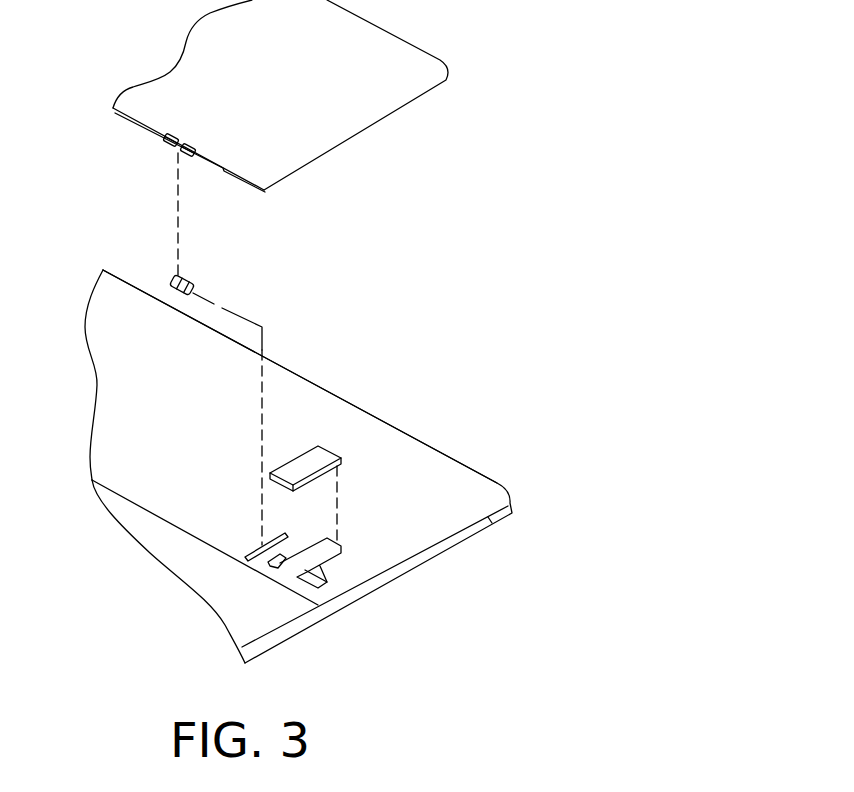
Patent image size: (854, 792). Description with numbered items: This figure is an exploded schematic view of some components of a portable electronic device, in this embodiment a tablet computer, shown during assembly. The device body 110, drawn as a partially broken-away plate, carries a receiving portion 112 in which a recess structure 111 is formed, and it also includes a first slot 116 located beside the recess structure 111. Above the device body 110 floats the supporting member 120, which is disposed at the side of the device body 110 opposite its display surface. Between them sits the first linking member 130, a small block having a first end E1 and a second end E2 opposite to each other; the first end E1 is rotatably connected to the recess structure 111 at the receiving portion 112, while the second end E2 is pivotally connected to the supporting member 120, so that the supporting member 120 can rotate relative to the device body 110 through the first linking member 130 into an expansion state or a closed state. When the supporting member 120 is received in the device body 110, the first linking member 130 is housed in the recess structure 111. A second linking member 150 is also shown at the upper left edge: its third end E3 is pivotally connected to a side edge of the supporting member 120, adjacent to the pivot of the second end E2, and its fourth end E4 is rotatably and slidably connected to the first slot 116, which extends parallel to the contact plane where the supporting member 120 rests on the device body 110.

The device body 110 is at (300, 624).
The recess structure 111 is at (342, 548).
The receiving portion 112 is at (449, 480).
The first slot 116 is at (254, 553).
The supporting member 120 is at (382, 37).
The first linking member 130 is at (302, 458).
The second linking member 150 is at (185, 288).
The first end E1 is at (328, 447).
The second end E2 is at (278, 488).
The third end E3 is at (172, 284).
The fourth end E4 is at (197, 290).